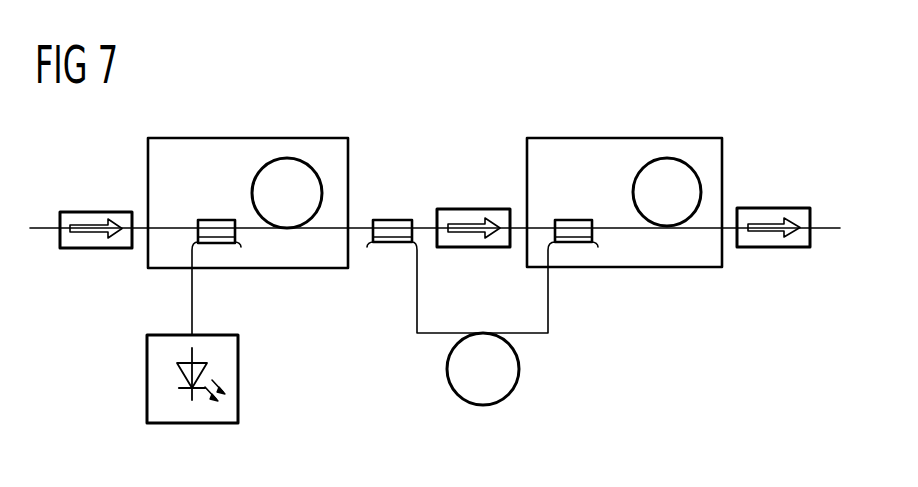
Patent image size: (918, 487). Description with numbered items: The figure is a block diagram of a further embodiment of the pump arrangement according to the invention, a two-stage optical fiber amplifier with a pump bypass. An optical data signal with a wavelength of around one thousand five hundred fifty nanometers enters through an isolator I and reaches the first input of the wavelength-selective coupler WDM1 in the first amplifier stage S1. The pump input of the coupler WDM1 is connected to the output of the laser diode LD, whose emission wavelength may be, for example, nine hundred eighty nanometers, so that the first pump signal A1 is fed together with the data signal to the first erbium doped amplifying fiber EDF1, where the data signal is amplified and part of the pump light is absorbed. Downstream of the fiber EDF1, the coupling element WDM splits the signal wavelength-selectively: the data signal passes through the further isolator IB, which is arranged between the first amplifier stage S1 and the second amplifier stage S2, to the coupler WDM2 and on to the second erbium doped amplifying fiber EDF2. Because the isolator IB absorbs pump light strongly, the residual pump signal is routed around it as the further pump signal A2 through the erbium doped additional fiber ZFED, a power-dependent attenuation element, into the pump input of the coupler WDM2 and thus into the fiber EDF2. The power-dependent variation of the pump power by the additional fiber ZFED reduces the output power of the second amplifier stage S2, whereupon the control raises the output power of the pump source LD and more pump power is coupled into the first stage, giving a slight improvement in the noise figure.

The isolator I is at (95, 212).
The further isolator IB is at (472, 209).
The first amplifier stage S1 is at (250, 138).
The second amplifier stage S2 is at (625, 138).
The wavelength-selective coupler WDM1 is at (215, 220).
The coupling element WDM is at (393, 220).
The coupler WDM2 is at (572, 220).
The first erbium doped amplifying fiber EDF1 is at (287, 193).
The second erbium doped amplifying fiber EDF2 is at (667, 192).
The first pump signal A1 is at (192, 304).
The further pump signal A2 is at (417, 302).
The laser diode LD is at (147, 377).
The erbium doped additional fiber ZFED is at (482, 406).